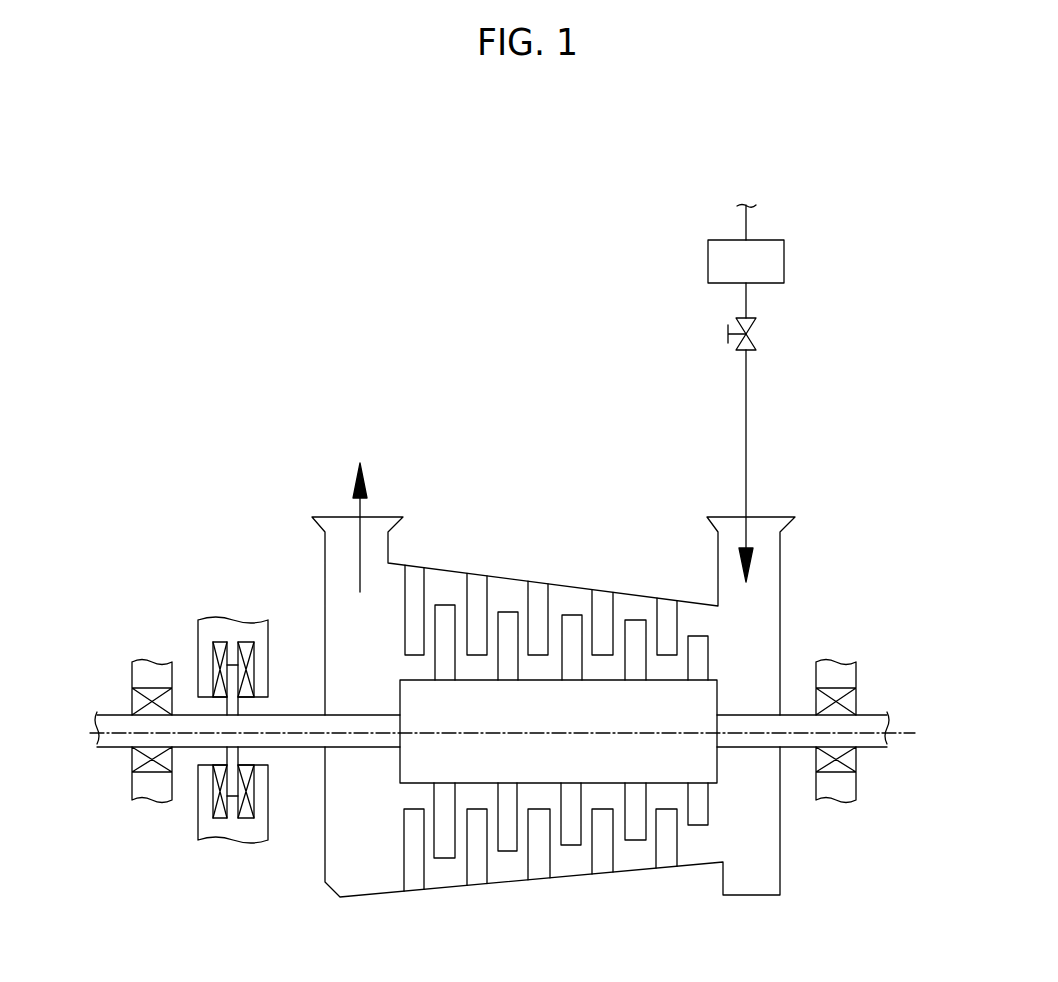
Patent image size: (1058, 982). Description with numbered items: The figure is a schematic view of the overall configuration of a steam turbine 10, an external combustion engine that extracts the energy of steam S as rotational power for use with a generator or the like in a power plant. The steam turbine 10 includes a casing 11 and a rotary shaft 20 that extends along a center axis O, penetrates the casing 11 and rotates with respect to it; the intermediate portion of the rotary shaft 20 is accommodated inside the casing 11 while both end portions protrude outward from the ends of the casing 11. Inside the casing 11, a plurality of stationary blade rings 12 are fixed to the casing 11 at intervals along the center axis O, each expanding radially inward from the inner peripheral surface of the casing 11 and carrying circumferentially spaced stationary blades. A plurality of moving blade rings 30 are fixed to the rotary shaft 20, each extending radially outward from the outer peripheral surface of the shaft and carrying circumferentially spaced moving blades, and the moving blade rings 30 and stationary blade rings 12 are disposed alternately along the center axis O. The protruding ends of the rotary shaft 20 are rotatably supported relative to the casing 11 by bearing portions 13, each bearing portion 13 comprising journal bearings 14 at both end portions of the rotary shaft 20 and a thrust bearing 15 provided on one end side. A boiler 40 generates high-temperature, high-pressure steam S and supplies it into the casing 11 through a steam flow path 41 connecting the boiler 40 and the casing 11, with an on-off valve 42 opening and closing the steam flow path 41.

The steam turbine 10 is at (557, 684).
The casing 11 is at (433, 570).
The stationary blade ring 12 is at (612, 850).
The bearing portion 13 is at (209, 678).
The journal bearing 14 is at (150, 665).
The thrust bearing 15 is at (232, 612).
The rotary shaft 20 is at (680, 783).
The moving blade ring 30 is at (508, 612).
The boiler 40 is at (784, 257).
The steam flow path 41 is at (748, 302).
The on-off valve 42 is at (737, 350).
The steam S is at (360, 548).
The center axis O is at (895, 736).